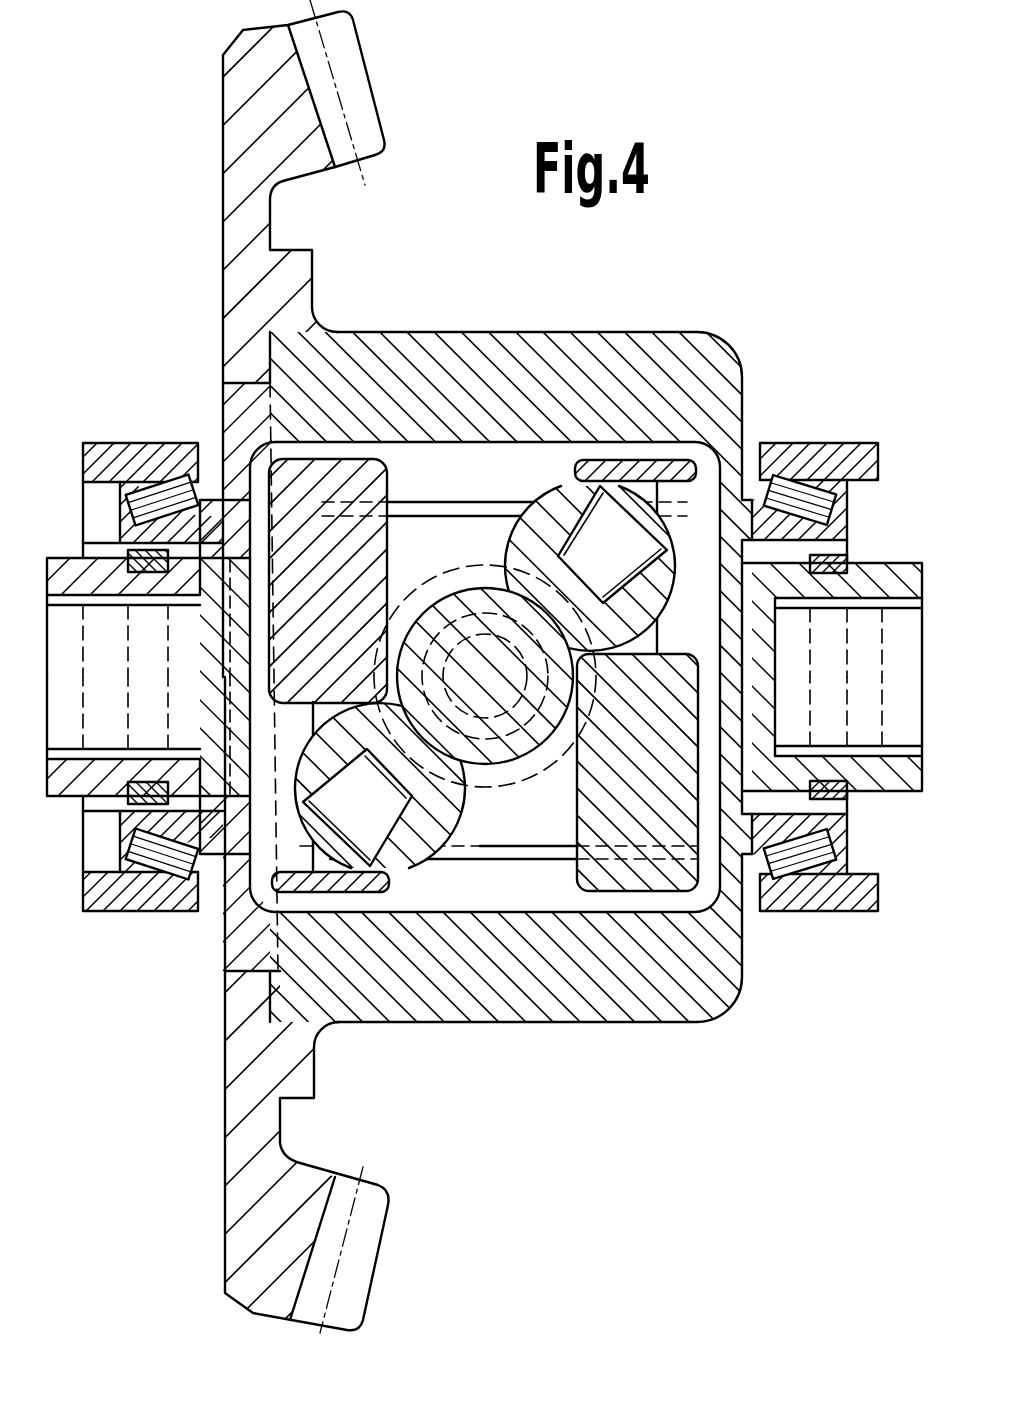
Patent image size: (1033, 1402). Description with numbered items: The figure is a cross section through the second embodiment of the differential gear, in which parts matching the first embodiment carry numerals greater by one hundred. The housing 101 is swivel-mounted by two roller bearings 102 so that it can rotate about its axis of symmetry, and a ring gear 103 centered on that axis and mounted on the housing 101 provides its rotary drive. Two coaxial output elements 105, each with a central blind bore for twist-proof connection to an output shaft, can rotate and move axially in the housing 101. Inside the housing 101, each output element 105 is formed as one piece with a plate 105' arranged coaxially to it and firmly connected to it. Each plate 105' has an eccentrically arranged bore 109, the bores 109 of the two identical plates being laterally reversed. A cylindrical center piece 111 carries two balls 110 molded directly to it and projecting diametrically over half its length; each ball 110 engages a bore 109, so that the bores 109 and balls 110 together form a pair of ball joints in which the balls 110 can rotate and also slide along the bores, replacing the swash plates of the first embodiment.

The housing 101 is at (402, 360).
The roller bearing 102 is at (143, 470).
The ring gear 103 is at (250, 128).
The output element 105 is at (516, 675).
The plate 105' is at (516, 732).
The bore 109 is at (642, 488).
The ball 110 is at (570, 505).
The cylindrical center piece 111 is at (508, 748).